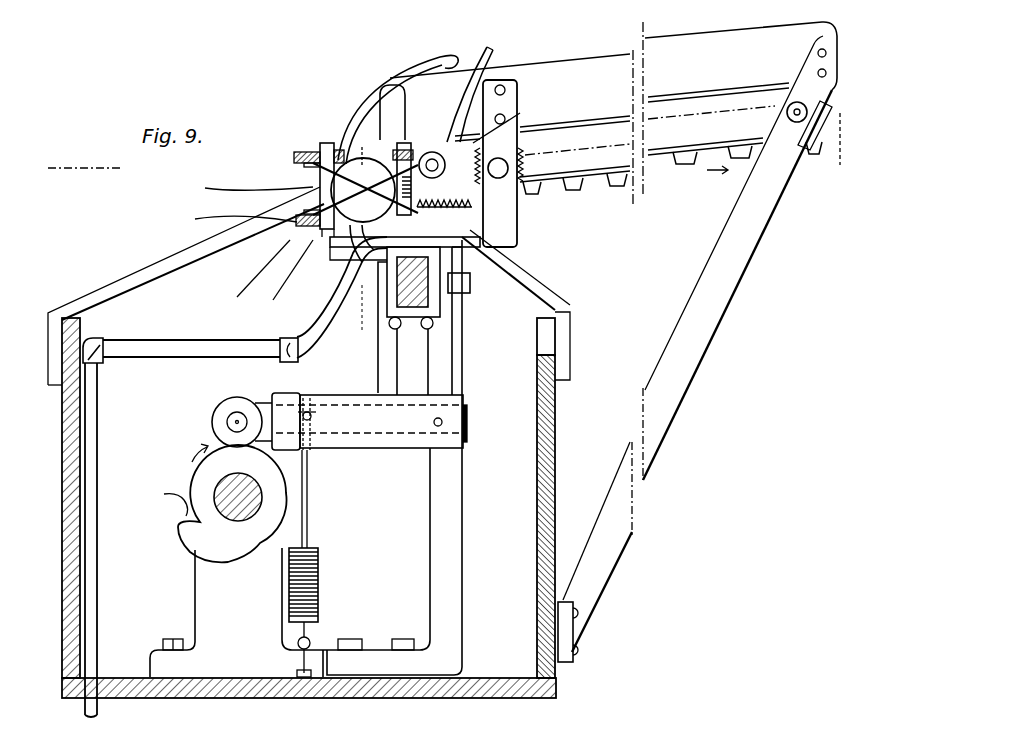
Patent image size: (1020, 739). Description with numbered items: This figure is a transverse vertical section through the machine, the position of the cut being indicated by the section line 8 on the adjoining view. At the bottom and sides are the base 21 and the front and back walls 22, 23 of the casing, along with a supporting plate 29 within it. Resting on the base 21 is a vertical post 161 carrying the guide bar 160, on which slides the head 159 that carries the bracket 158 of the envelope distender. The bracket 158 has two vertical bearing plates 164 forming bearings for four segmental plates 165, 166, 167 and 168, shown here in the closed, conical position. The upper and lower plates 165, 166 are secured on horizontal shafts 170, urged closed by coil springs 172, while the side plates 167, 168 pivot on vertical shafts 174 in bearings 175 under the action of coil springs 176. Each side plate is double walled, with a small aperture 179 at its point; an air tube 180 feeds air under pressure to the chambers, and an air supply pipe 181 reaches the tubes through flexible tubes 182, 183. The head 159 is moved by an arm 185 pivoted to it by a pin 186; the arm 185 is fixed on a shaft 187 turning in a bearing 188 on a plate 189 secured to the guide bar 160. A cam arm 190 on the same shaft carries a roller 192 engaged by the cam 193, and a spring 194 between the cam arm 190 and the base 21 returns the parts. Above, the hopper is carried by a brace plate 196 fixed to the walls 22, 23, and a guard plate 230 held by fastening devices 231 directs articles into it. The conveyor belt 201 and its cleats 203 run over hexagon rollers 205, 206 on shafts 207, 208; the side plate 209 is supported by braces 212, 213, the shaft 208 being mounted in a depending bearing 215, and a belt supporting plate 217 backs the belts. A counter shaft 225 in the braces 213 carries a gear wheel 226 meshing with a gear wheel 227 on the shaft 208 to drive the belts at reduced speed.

The section line 8- 8 is at (844, 159).
The base 21 is at (133, 689).
The front wall 22 is at (556, 466).
The back wall 23 is at (64, 470).
The supporting plate 29 is at (195, 607).
The bracket 158 is at (482, 245).
The head 159 is at (440, 292).
The guide bar 160 is at (427, 300).
The vertical post 161 is at (378, 652).
The vertical bearing plates 164 is at (440, 222).
The upper segmental plate 165 is at (372, 142).
The lower segmental plate 166 is at (335, 267).
The side segmental plate 167 is at (363, 145).
The side segmental plate 168 is at (340, 150).
The horizontal shafts 170 is at (305, 233).
The coil springs 172 is at (303, 232).
The vertical shafts 174 is at (315, 183).
The bearings 175 is at (315, 178).
The coil springs 176 is at (242, 183).
The aperture 179 is at (278, 279).
The air tube 180 is at (237, 297).
The air supply pipe 181 is at (93, 408).
The flexible tube 182 is at (330, 330).
The flexible tube 183 is at (320, 300).
The arm 185 is at (458, 364).
The pin 186 is at (471, 286).
The shaft 187 is at (468, 433).
The bearing 188 is at (387, 444).
The plate 189 is at (380, 366).
The cam arm 190 is at (314, 449).
The roller 192 is at (222, 410).
The cam 193 is at (200, 478).
The spring 194 is at (319, 567).
The brace plate 196 is at (536, 291).
The conveyor belt 201 is at (816, 160).
The cleats 203 is at (688, 166).
The hexagon roller 205 is at (787, 117).
The hexagon roller 206 is at (453, 138).
The shaft 207 is at (796, 123).
The shaft 208 is at (487, 47).
The side plate 209 is at (572, 68).
The braces 212 is at (592, 606).
The braces 213 is at (518, 220).
The bearings 215 is at (490, 53).
The belt supporting plate 217 is at (590, 134).
The counter shaft 225 is at (500, 178).
The gear wheel 226 is at (527, 172).
The gear wheel 227 is at (515, 121).
The guard plate 230 is at (413, 63).
The fastening devices 231 is at (227, 221).